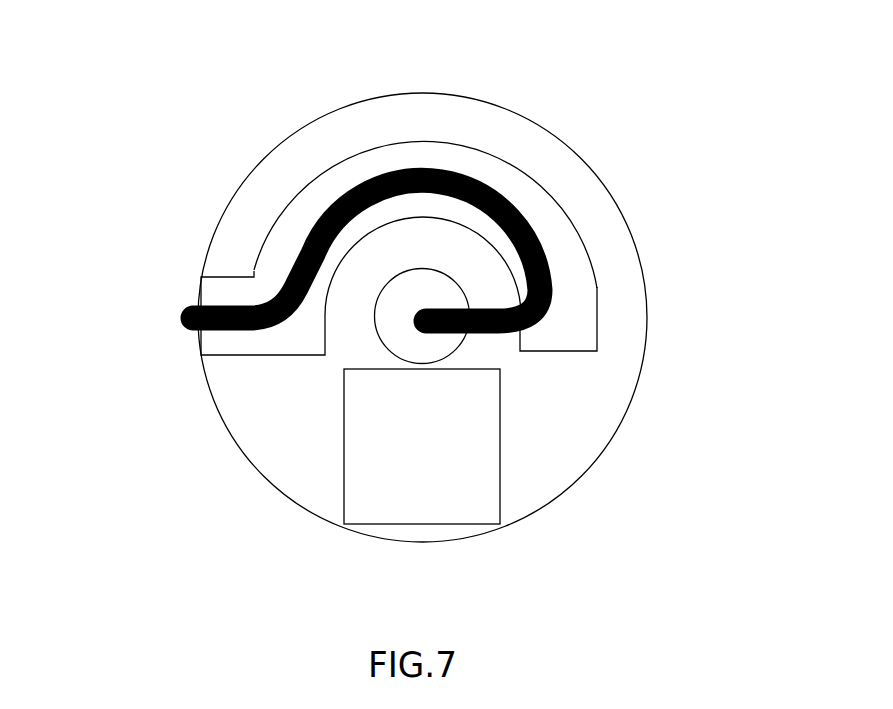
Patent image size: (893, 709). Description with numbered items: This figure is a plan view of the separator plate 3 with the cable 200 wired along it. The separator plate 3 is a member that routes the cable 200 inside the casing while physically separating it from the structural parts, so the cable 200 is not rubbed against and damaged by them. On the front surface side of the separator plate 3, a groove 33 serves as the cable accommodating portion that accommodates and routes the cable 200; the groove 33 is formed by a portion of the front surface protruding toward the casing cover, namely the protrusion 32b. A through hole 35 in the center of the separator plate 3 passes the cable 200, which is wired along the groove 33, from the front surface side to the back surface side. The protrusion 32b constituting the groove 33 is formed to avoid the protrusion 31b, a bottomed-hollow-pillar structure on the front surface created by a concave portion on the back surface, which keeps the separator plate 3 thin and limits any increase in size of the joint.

The separator plate 3 is at (630, 195).
The groove 33 is at (448, 163).
The protrusion 32b is at (233, 242).
The through hole 35 is at (392, 317).
The protrusion 31b is at (427, 455).
The cable 200 is at (505, 335).